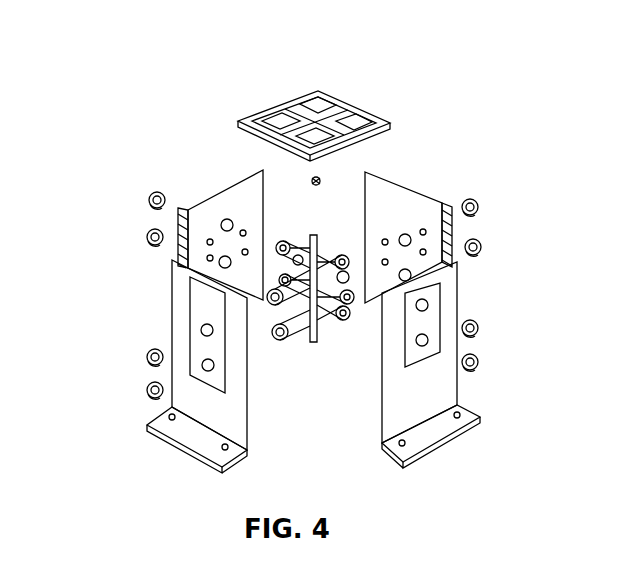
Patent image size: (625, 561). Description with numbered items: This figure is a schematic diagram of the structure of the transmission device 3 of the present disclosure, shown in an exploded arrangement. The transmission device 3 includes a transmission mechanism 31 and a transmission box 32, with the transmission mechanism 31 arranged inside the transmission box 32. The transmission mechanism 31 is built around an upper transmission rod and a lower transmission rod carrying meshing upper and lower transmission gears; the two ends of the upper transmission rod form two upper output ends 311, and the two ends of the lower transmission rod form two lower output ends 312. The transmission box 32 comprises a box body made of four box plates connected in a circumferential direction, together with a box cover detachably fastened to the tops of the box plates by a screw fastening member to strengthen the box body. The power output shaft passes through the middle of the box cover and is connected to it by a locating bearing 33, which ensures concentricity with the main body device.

The transmission device 3 is at (48, 23).
The transmission mechanism 31 is at (312, 299).
The upper output ends 311 is at (362, 273).
The lower output ends 312 is at (358, 322).
The transmission box 32 is at (268, 106).
The locating bearing 33 is at (322, 178).